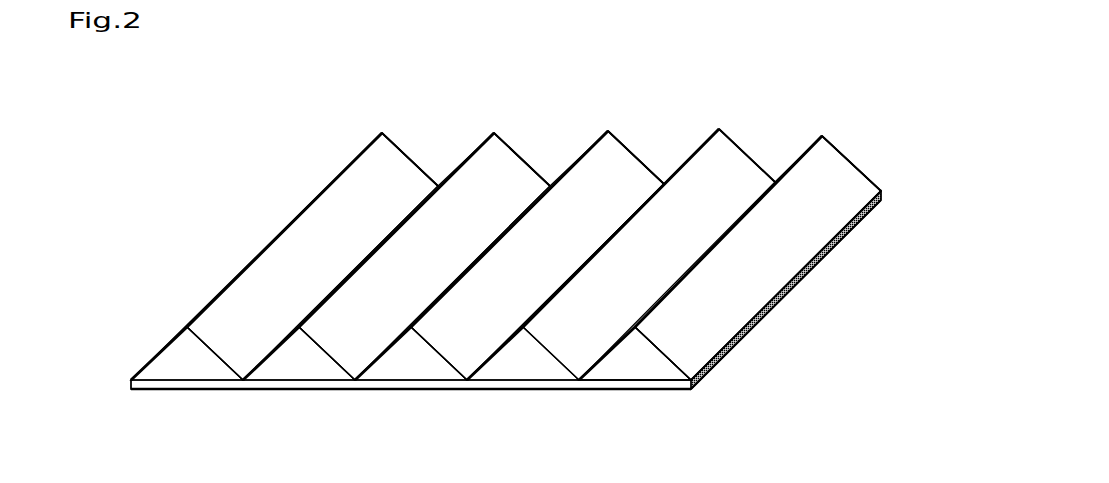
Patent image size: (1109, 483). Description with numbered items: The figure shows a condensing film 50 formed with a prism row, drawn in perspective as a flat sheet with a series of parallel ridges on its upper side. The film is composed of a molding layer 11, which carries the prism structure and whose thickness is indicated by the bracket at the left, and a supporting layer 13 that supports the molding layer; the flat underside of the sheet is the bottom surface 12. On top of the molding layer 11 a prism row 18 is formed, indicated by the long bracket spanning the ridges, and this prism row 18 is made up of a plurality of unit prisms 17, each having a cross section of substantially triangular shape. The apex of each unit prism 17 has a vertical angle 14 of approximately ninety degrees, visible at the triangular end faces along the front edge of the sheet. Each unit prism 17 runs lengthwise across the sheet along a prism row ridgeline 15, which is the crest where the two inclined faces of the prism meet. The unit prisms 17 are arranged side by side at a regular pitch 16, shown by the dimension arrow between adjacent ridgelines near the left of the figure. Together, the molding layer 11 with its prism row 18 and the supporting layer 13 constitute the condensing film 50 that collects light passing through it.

The condensing film 50 is at (980, 80).
The molding layer 11 is at (131, 327).
The bottom surface 12 is at (364, 391).
The supporting layer 13 is at (688, 398).
The vertical angle 14 is at (667, 355).
The prism row ridgeline 15 is at (820, 158).
The pitch 16 is at (300, 327).
The unit prism 17 is at (615, 164).
The prism row 18 is at (857, 118).